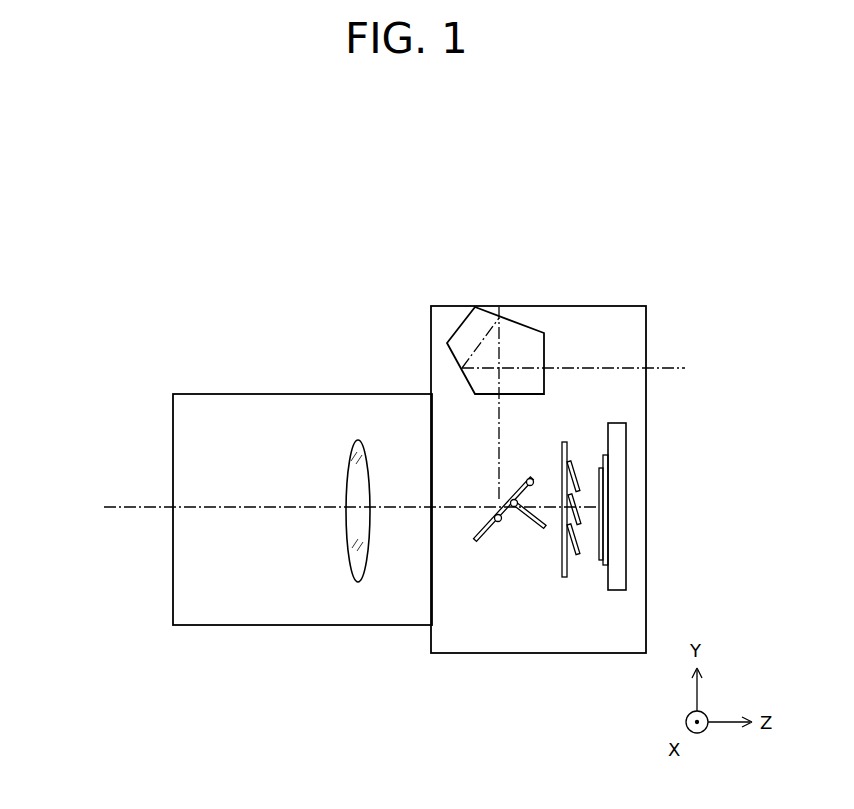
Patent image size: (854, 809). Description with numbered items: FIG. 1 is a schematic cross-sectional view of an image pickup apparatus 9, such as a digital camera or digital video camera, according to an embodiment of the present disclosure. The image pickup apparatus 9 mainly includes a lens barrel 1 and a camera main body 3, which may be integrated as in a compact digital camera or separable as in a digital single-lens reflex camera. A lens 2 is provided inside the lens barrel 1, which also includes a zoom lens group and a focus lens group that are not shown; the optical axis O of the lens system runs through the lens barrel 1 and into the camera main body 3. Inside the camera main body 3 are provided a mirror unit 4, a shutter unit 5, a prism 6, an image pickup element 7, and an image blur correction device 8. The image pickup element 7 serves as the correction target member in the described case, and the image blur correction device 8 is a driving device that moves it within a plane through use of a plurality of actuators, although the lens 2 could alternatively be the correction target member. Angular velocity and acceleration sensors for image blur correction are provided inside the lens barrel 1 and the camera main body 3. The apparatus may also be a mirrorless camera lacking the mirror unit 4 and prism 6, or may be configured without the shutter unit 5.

The image pickup apparatus 9 is at (134, 230).
The lens barrel 1 is at (189, 393).
The lens 2 is at (358, 440).
The optical axis O is at (140, 507).
The camera main body 3 is at (452, 306).
The prism 6 is at (508, 313).
The mirror unit 4 is at (552, 548).
The shutter unit 5 is at (563, 577).
The image pickup element 7 is at (600, 562).
The image blur correction device 8 is at (614, 590).